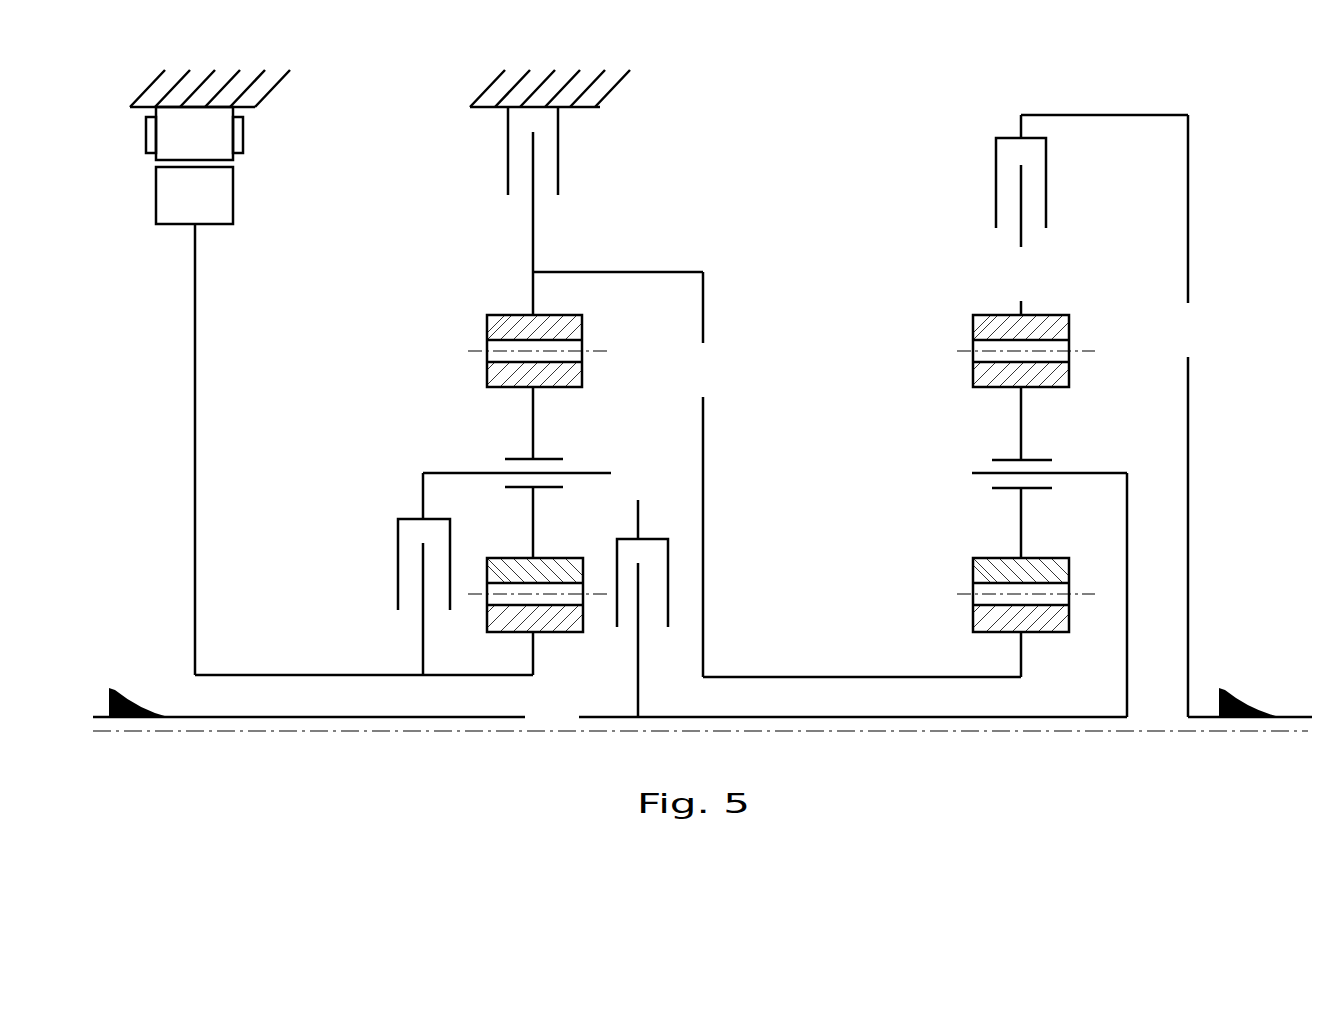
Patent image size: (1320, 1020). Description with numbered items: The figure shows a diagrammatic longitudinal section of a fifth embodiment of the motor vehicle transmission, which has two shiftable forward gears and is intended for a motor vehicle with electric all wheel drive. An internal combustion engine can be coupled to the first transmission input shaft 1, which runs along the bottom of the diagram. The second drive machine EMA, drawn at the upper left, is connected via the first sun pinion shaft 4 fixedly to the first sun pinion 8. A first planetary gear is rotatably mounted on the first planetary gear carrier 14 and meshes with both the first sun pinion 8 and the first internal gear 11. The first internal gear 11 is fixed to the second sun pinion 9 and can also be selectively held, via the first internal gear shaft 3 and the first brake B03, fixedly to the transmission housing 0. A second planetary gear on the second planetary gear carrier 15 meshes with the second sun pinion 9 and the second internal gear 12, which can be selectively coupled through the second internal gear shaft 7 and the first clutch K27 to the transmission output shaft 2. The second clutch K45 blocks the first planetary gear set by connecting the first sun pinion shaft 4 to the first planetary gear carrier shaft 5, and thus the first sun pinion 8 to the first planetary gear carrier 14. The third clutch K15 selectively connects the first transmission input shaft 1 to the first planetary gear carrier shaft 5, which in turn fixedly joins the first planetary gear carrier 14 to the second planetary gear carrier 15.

The transmission housing 0 is at (612, 91).
The first transmission input shaft 1 is at (702, 716).
The transmission output shaft 2 is at (1118, 416).
The first internal gear shaft 3 is at (777, 404).
The first sun pinion shaft 4 is at (195, 483).
The first planetary gear carrier shaft 5 is at (638, 492).
The second internal gear shaft 7 is at (1021, 281).
The first sun pinion 8 is at (567, 632).
The second sun pinion 9 is at (975, 627).
The first internal gear 11 is at (487, 315).
The second internal gear 12 is at (973, 315).
The first planetary gear carrier 14 is at (493, 473).
The second planetary gear carrier 15 is at (1090, 473).
The first brake B03 is at (558, 153).
The third clutch K15 is at (668, 623).
The first clutch K27 is at (996, 186).
The second clutch K45 is at (398, 563).
The second drive machine EMA is at (150, 170).